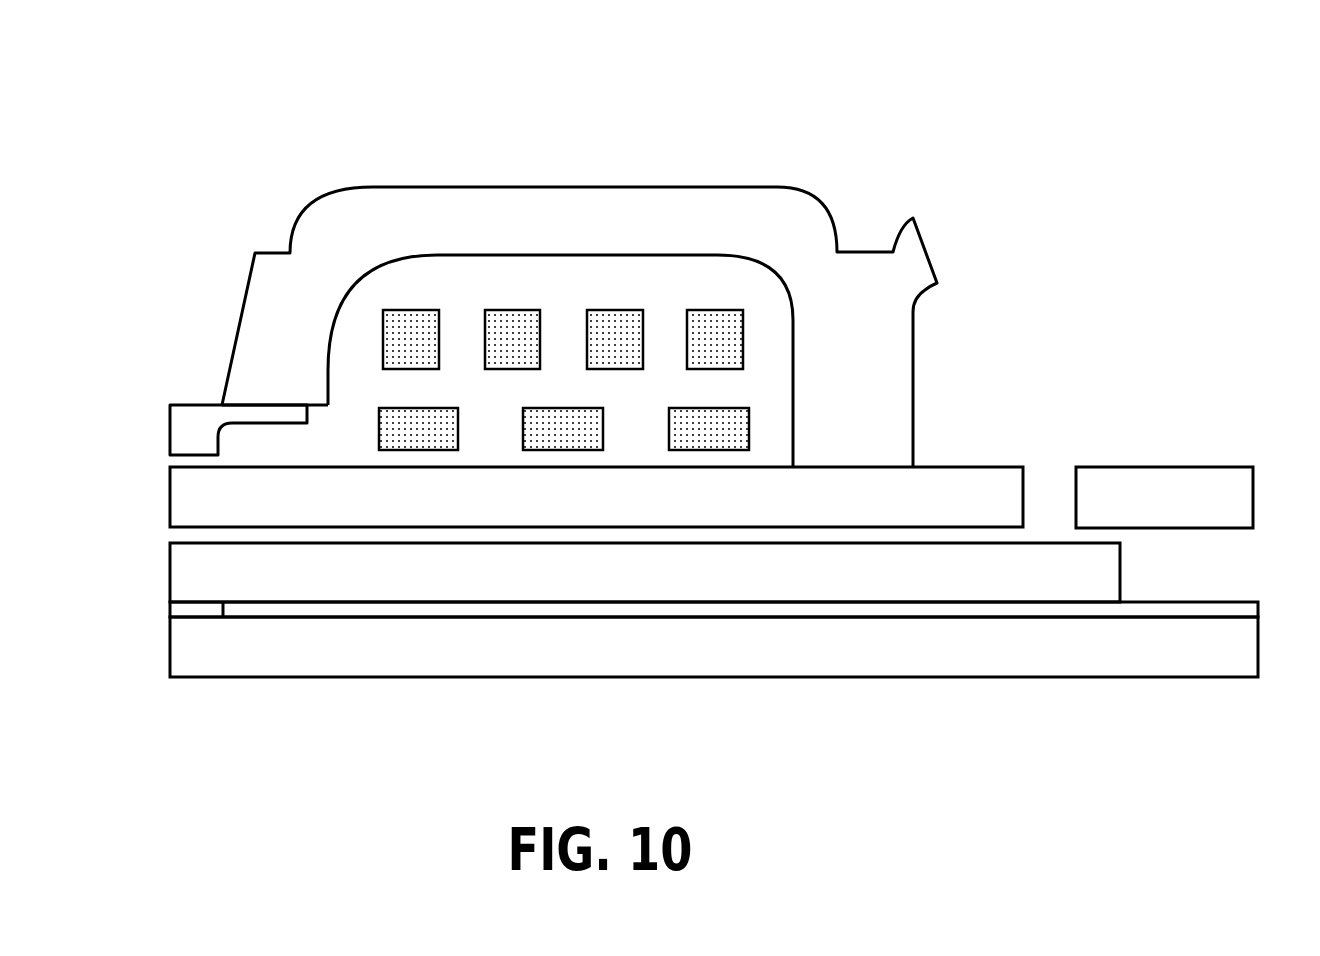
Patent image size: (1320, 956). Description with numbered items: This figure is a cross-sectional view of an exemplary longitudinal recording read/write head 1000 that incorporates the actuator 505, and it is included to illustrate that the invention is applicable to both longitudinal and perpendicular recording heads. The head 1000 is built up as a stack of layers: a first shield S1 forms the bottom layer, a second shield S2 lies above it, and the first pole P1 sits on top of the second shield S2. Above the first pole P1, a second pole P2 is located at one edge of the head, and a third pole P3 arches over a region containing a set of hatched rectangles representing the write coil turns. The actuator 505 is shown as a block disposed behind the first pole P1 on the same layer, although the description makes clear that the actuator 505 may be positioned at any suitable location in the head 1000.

The longitudinal recording read/write head 1000 is at (597, 73).
The third pole P3 is at (566, 235).
The second pole P2 is at (213, 436).
The first pole P1 is at (568, 511).
The actuator 505 is at (1190, 510).
The second shield S2 is at (617, 586).
The first shield S1 is at (687, 661).